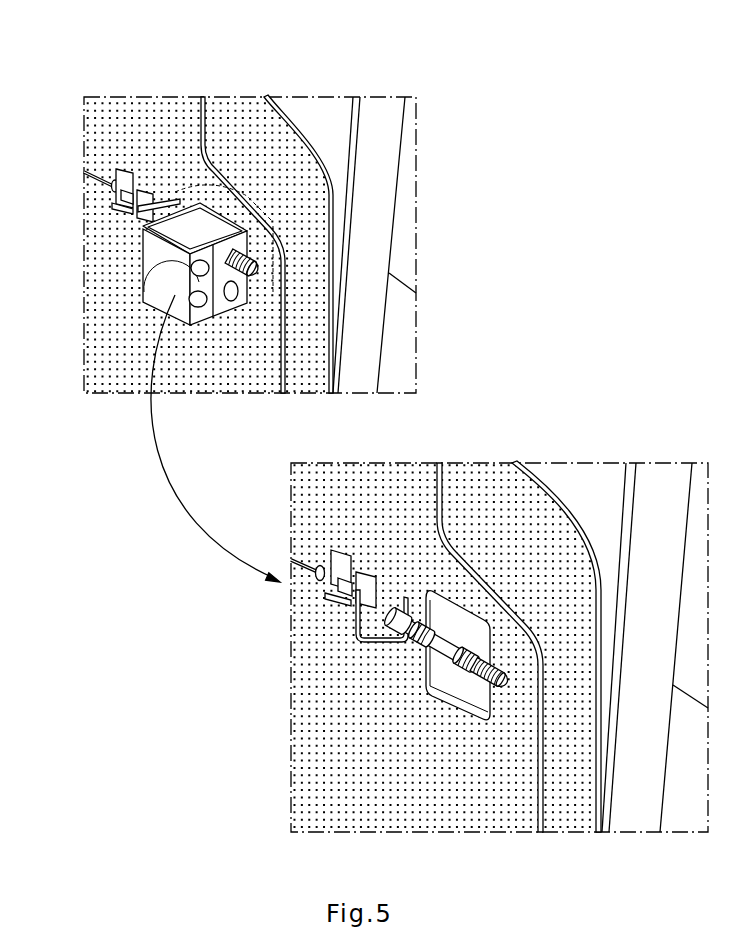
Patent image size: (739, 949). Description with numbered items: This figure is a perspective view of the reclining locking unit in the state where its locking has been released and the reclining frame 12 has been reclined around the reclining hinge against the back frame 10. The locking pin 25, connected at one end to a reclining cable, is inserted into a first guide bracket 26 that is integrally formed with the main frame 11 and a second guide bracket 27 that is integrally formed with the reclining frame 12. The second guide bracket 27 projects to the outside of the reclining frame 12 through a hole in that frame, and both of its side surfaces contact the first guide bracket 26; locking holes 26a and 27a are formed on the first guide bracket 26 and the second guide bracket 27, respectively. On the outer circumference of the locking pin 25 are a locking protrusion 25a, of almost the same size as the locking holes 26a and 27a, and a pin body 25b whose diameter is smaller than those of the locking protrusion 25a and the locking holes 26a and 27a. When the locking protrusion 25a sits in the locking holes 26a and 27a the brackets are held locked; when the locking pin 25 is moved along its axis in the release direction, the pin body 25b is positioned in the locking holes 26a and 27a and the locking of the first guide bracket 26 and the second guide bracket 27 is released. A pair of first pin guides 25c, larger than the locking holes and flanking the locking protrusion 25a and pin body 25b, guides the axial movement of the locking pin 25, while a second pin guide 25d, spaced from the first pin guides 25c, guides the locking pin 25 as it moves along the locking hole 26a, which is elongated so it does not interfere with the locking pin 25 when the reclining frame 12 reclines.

The back frame 10 is at (332, 43).
The main frame 11 is at (308, 117).
The reclining frame 12 is at (263, 98).
The locking pin 25 is at (257, 275).
The locking protrusion 25a is at (413, 633).
The pin body 25b is at (423, 640).
The first pin guides 25c is at (433, 635).
The second pin guide 25d is at (462, 660).
The first guide bracket 26 is at (147, 265).
The locking hole 26a is at (190, 262).
The second guide bracket 27 is at (223, 303).
The locking hole 27a is at (143, 232).